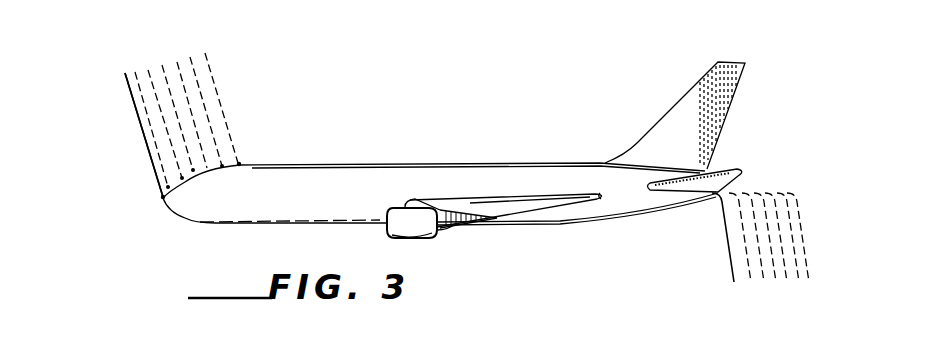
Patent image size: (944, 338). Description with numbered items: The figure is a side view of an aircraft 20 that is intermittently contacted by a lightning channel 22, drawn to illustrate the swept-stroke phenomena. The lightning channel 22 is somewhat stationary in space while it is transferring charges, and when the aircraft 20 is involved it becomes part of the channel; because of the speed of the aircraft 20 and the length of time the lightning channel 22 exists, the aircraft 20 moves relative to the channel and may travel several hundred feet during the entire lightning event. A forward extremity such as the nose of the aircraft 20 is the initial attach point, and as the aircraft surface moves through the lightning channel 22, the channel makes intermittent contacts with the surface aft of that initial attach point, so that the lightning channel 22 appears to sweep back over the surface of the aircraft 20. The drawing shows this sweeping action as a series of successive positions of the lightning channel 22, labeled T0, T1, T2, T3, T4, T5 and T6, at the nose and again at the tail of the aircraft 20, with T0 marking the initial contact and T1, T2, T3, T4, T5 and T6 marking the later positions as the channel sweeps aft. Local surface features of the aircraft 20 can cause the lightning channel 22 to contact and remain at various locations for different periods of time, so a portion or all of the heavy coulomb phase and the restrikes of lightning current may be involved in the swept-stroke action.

The aircraft 20 is at (323, 164).
The lightning channel 22 is at (150, 162).
The time T0 station line T0 is at (122, 80).
The time T1 station line T1 is at (146, 111).
The time T2 station line T2 is at (174, 153).
The time T3 station line T3 is at (172, 90).
The time T4 station line T4 is at (191, 100).
The time T5 station line T5 is at (209, 110).
The time T6 station line T6 is at (229, 117).